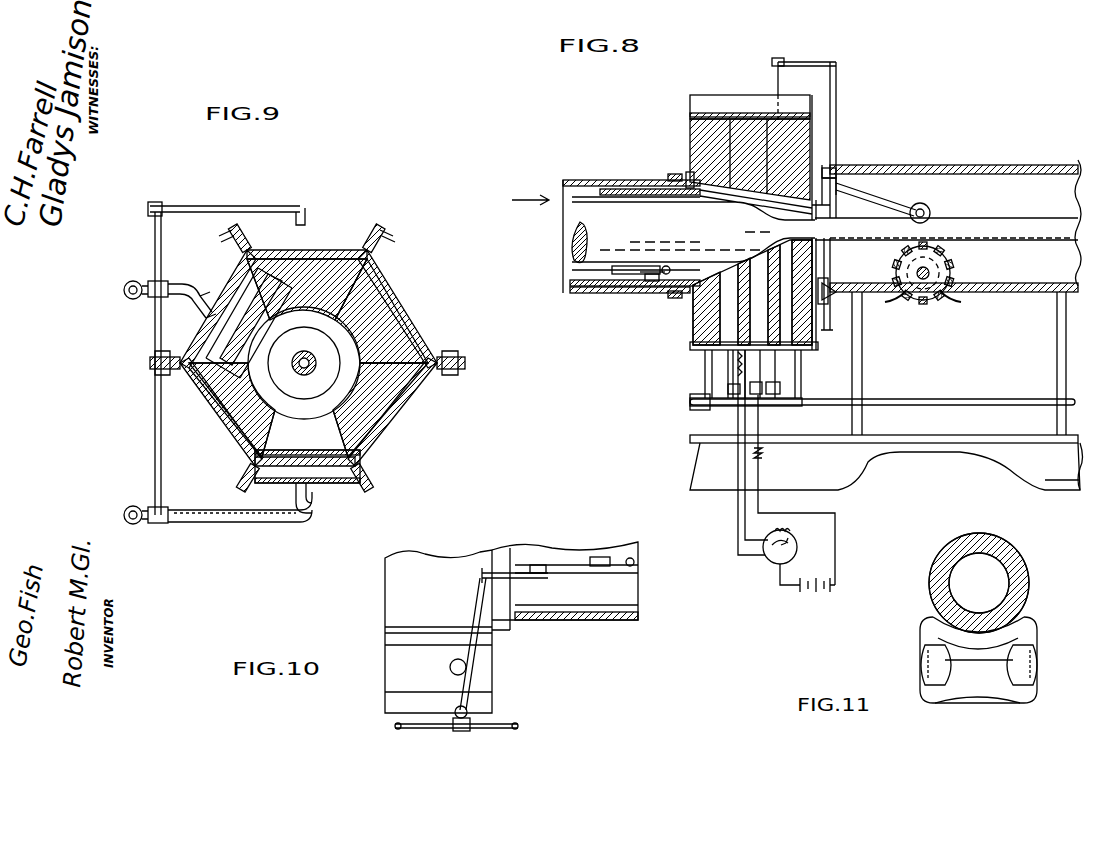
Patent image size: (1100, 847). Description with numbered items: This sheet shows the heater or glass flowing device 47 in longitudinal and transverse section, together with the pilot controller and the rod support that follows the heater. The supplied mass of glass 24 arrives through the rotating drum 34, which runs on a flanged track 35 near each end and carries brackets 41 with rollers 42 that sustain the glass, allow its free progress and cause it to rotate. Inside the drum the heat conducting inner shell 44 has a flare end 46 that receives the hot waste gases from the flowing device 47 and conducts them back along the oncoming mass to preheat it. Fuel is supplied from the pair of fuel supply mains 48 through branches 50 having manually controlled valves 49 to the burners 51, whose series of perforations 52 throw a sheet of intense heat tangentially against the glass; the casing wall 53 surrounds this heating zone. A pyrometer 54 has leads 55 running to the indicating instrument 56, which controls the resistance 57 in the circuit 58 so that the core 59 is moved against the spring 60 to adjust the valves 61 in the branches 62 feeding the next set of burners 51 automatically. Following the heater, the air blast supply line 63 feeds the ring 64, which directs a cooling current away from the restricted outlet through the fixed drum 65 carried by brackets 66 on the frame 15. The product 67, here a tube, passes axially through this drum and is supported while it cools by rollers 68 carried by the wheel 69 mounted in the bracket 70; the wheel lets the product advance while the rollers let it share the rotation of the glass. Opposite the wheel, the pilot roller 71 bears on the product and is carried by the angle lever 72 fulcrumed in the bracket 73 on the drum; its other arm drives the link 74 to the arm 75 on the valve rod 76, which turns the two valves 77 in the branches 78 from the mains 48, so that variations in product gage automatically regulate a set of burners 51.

In FIG. 8, the frame 15 is at (698, 462).
In FIG. 8, the mass of glass 24 is at (606, 180).
In FIG. 8, the drum 34 is at (628, 295).
In FIG. 8, the flanged track 35 is at (681, 175).
In FIG. 8, the brackets 41 is at (652, 282).
In FIG. 8, the rollers 42 is at (612, 276).
In FIG. 8, the inner shell 44 is at (655, 180).
In FIG. 8, the flare end 46 is at (690, 182).
In FIG. 8, the flowing device 47 is at (700, 95).
In FIG. 9, the flowing device 47 is at (332, 248).
In FIG. 8, the fuel supply mains 48 is at (868, 406).
In FIG. 9, the fuel supply mains 48 is at (128, 296).
In FIG. 10, the fuel supply mains 48 is at (408, 722).
In FIG. 8, the manually controlled valves 49 is at (705, 404).
In FIG. 8, the branches 50 is at (720, 388).
In FIG. 8, the burners 51 is at (725, 372).
In FIG. 9, the burners 51 is at (215, 340).
In FIG. 9, the perforations 52 is at (178, 366).
In FIG. 9, the casing wall 53 is at (200, 383).
In FIG. 8, the pyrometer 54 is at (735, 318).
In FIG. 8, the leads 55 is at (738, 516).
In FIG. 8, the indicating instrument 56 is at (768, 560).
In FIG. 8, the resistance 57 is at (792, 528).
In FIG. 8, the circuit 58 is at (826, 590).
In FIG. 8, the core 59 is at (765, 455).
In FIG. 8, the spring 60 is at (795, 406).
In FIG. 8, the valves 61 is at (758, 394).
In FIG. 8, the branches 62 is at (742, 394).
In FIG. 8, the air blast supply line 63 is at (834, 318).
In FIG. 8, the ring 64 is at (838, 290).
In FIG. 10, the ring 64 is at (510, 640).
In FIG. 8, the fixed drum 65 is at (905, 167).
In FIG. 10, the fixed drum 65 is at (560, 622).
In FIG. 8, the brackets 66 is at (862, 375).
In FIG. 8, the product 67 is at (950, 216).
In FIG. 11, the product 67 is at (1026, 578).
In FIG. 8, the rollers 68 is at (935, 300).
In FIG. 11, the rollers 68 is at (1027, 625).
In FIG. 8, the wheel 69 is at (945, 296).
In FIG. 11, the wheel 69 is at (1034, 637).
In FIG. 8, the bracket 70 is at (935, 276).
In FIG. 8, the pilot roller 71 is at (926, 206).
In FIG. 10, the pilot roller 71 is at (610, 575).
In FIG. 8, the angle lever 72 is at (880, 183).
In FIG. 10, the angle lever 72 is at (576, 560).
In FIG. 8, the bracket 73 is at (868, 172).
In FIG. 8, the link 74 is at (836, 62).
In FIG. 10, the link 74 is at (503, 570).
In FIG. 8, the arm 75 is at (790, 60).
In FIG. 9, the arm 75 is at (195, 206).
In FIG. 10, the arm 75 is at (472, 613).
In FIG. 8, the valve rod 76 is at (772, 70).
In FIG. 9, the valve rod 76 is at (152, 243).
In FIG. 10, the valve rod 76 is at (470, 706).
In FIG. 9, the valves 77 is at (147, 287).
In FIG. 9, the branches 78 is at (172, 282).